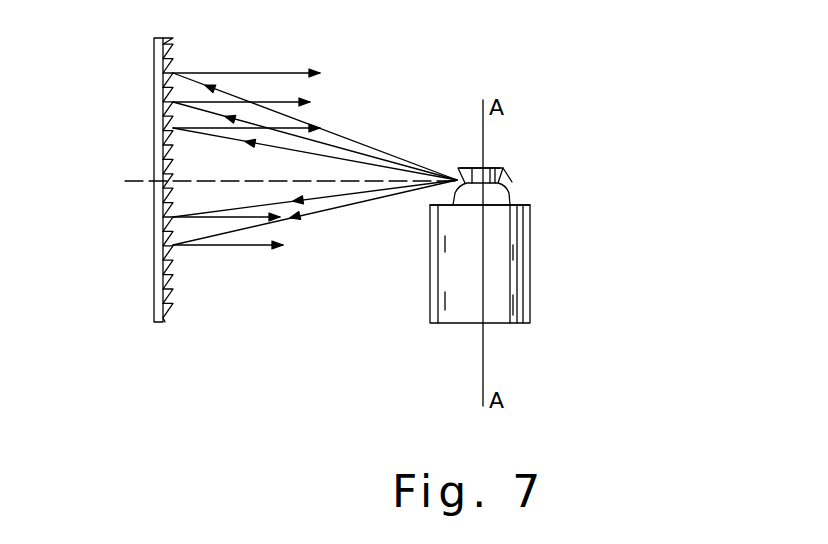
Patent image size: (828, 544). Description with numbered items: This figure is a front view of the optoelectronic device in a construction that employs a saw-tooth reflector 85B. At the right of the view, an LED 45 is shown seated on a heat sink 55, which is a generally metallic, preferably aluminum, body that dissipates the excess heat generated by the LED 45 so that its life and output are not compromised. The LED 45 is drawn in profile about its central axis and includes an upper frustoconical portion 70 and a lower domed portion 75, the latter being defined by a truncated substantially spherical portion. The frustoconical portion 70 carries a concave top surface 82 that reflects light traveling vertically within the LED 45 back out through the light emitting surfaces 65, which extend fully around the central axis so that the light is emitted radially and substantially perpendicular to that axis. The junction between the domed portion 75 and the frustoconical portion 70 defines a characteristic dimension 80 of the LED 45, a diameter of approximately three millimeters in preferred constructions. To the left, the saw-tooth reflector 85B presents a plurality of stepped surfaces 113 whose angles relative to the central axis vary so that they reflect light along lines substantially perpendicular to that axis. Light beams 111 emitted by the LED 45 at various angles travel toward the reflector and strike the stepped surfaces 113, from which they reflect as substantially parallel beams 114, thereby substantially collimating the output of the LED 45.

The LED 45 is at (487, 216).
The heat sink 55 is at (452, 221).
The light emitting surfaces 65 is at (512, 182).
The upper frustoconical portion 70 is at (515, 178).
The lower domed portion 75 is at (515, 200).
The characteristic dimension 80 is at (467, 167).
The concave top surface 82 is at (500, 162).
The saw-tooth reflector 85B is at (156, 222).
The light beams 111 is at (337, 148).
The stepped surfaces 113 is at (174, 276).
The substantially parallel beams 114 is at (300, 142).